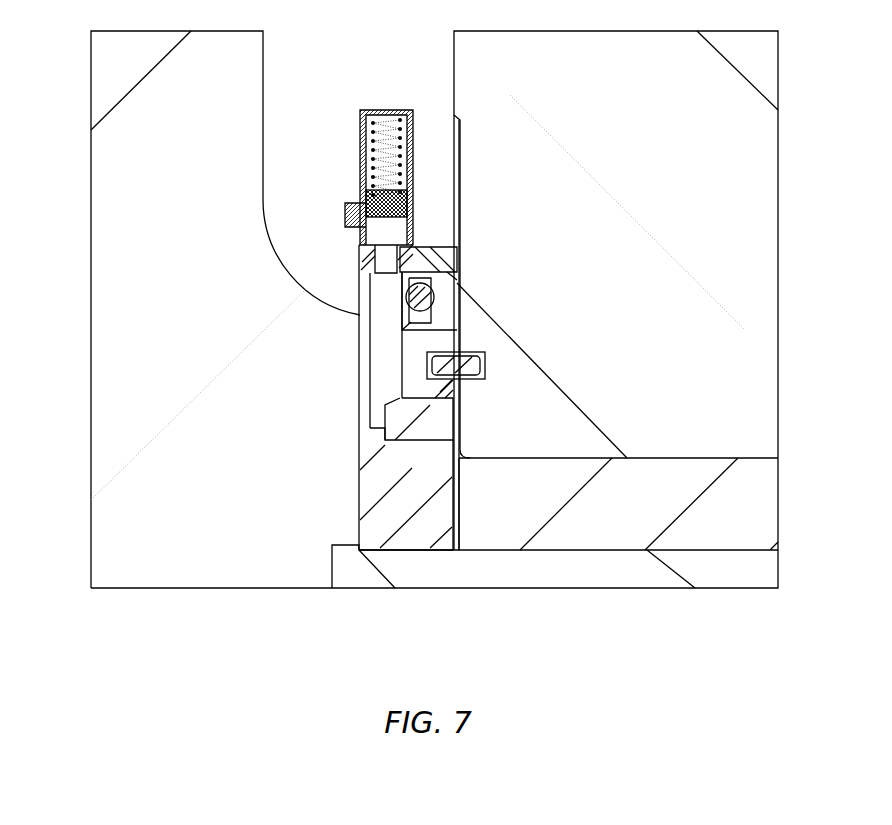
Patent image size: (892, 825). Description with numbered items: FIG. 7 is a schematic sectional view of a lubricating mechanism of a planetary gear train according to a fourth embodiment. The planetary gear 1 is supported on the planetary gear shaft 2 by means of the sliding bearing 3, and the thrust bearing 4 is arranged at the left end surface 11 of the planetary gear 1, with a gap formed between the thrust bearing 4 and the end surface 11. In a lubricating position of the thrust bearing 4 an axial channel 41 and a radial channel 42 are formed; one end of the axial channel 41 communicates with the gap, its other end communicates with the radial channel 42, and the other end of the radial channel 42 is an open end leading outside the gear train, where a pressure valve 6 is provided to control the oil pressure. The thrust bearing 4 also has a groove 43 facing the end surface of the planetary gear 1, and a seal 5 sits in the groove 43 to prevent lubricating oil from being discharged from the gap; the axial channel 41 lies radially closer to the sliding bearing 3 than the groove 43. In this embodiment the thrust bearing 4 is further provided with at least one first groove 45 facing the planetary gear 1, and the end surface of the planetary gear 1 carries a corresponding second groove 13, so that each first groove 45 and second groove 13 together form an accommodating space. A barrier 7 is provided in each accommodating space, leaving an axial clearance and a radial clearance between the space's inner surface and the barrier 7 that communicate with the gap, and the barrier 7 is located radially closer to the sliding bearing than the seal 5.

The planetary gear 1 is at (723, 155).
The left end surface 11 is at (448, 82).
The planetary gear shaft 2 is at (603, 570).
The sliding bearing 3 is at (750, 527).
The thrust bearing 4 is at (388, 483).
The axial channel 41 is at (420, 422).
The radial channel 42 is at (376, 328).
The groove 43 is at (439, 258).
The first groove 45 is at (422, 370).
The seal 5 is at (440, 297).
The pressure valve 6 is at (372, 158).
The barrier 7 is at (470, 381).
The second groove 13 is at (492, 370).